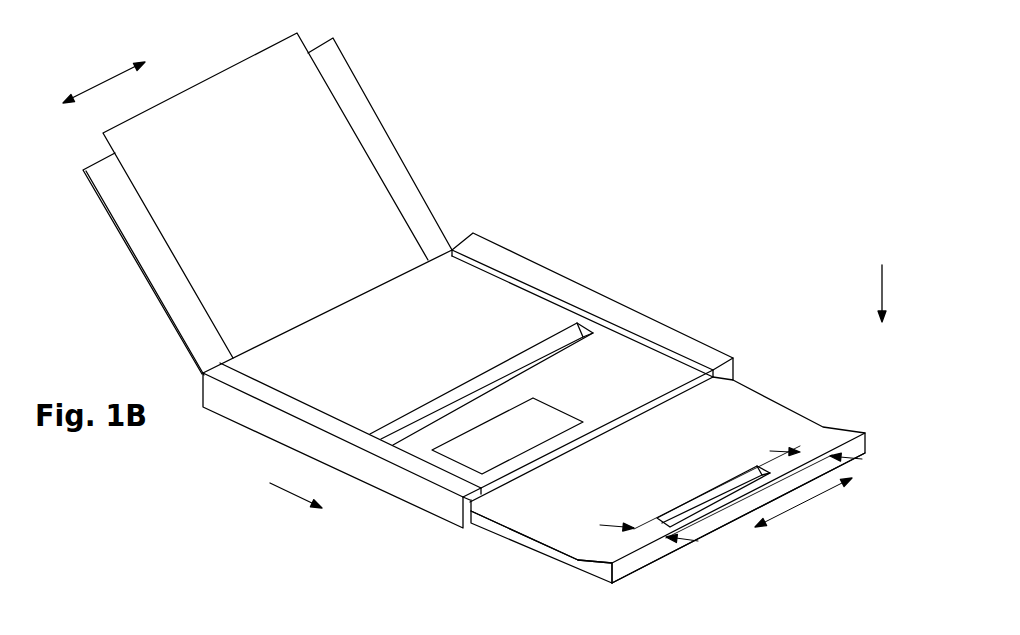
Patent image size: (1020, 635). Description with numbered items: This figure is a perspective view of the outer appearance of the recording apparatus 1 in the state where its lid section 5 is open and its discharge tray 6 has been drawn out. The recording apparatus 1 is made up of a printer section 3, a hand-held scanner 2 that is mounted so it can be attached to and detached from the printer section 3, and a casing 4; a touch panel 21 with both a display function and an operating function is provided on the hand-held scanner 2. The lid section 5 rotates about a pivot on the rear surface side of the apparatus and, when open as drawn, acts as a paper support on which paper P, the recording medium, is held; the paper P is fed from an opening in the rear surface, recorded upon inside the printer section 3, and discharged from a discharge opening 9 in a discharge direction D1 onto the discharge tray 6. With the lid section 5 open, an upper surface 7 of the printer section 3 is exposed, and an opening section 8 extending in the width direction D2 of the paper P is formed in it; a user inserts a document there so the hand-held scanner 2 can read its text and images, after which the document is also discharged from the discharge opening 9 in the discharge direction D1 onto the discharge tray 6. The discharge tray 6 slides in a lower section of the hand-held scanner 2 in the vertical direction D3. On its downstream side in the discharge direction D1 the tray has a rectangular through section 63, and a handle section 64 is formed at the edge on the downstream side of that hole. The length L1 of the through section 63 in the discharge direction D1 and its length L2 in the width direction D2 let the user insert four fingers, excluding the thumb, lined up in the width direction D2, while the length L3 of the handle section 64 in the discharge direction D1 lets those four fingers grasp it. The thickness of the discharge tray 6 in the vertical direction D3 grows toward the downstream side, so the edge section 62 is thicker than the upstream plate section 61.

The recording apparatus 1 is at (709, 170).
The hand-held scanner 2 is at (655, 350).
The printer section 3 is at (490, 228).
The casing 4 is at (260, 415).
The lid section 5 is at (152, 256).
The discharge tray 6 is at (767, 415).
The upper surface 7 is at (523, 300).
The opening section 8 is at (518, 363).
The discharge opening 9 is at (583, 447).
The touch panel 21 is at (484, 432).
The plate section 61 is at (518, 539).
The edge section 62 is at (595, 570).
The through section 63 is at (723, 486).
The handle section 64 is at (637, 563).
The paper P is at (221, 90).
The discharge direction D1 is at (294, 508).
The width direction D2 is at (104, 75).
The vertical direction D3 is at (884, 310).
The length of the through section in the discharge direction L1 is at (698, 494).
The length of the through section in the width direction L2 is at (803, 507).
The length of the handle section in the discharge direction L3 is at (836, 461).